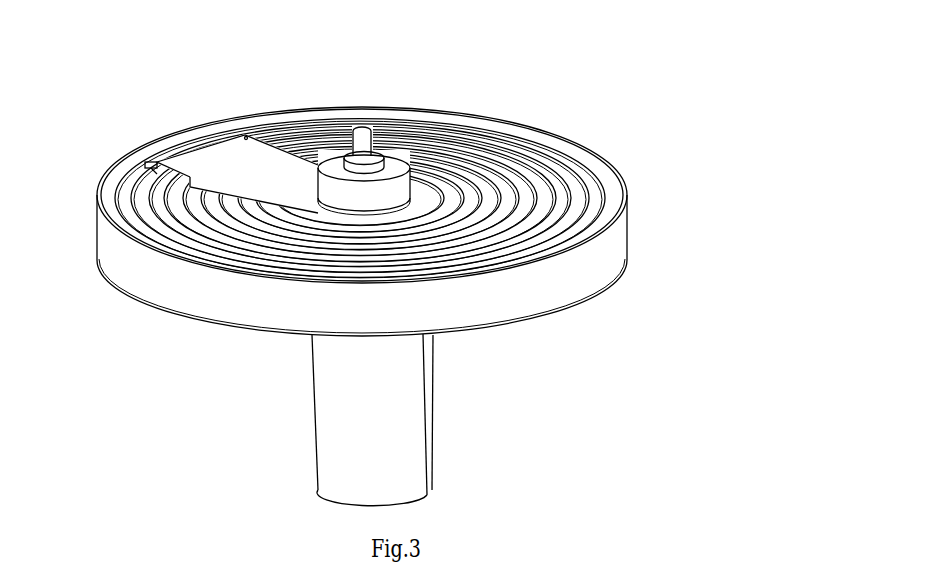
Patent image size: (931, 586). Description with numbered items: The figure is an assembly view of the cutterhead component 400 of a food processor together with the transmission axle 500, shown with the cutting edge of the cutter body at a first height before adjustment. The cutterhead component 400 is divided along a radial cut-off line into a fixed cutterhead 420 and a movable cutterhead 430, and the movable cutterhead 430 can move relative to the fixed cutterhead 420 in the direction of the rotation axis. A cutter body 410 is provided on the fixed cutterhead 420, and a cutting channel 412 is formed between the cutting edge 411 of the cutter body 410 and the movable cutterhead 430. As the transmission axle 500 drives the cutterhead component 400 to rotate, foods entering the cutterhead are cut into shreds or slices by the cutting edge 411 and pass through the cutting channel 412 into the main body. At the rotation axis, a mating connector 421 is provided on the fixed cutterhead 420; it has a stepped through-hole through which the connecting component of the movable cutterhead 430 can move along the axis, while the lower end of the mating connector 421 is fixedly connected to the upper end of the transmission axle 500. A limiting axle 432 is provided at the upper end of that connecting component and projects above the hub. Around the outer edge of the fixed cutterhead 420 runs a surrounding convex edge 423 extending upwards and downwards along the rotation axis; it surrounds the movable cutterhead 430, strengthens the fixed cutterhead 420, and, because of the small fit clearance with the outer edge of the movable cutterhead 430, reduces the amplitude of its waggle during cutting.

The cutterhead component 400 is at (396, 199).
The cutter body 410 is at (181, 110).
The cutting edge 411 is at (107, 127).
The cutting channel 412 is at (194, 285).
The fixed cutterhead 420 is at (575, 184).
The mating connector 421 is at (482, 202).
The surrounding convex edge 423 is at (430, 265).
The movable cutterhead 430 is at (317, 198).
The limiting axle 432 is at (227, 110).
The transmission axle 500 is at (410, 427).